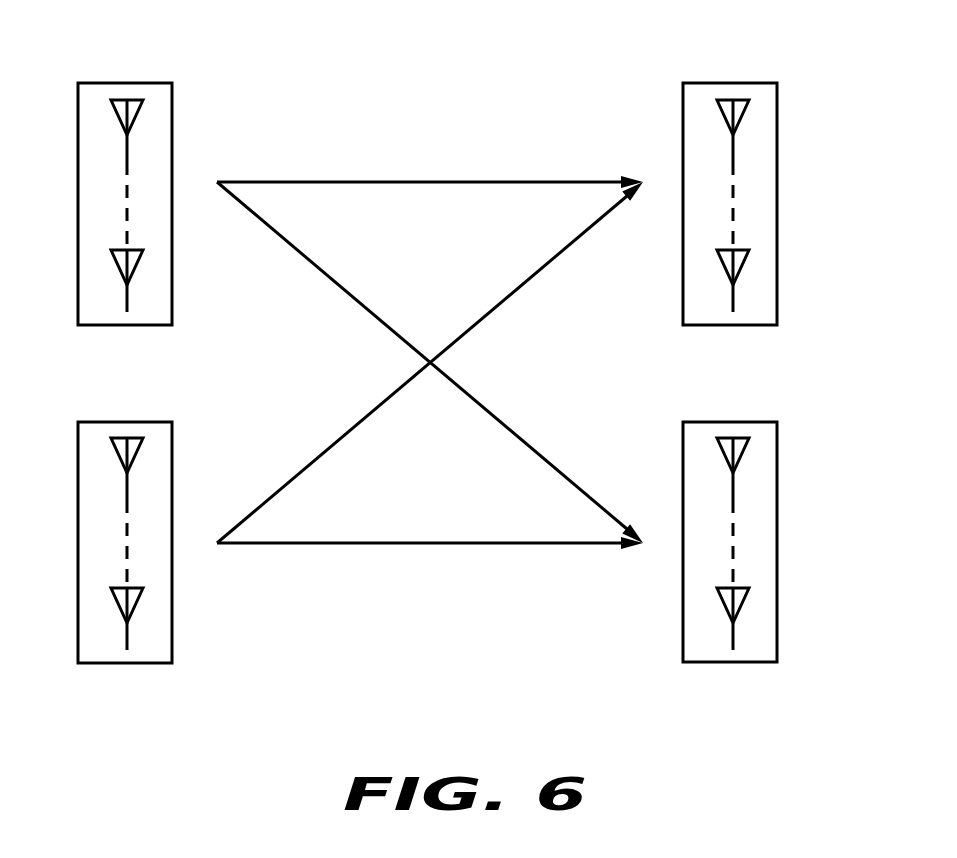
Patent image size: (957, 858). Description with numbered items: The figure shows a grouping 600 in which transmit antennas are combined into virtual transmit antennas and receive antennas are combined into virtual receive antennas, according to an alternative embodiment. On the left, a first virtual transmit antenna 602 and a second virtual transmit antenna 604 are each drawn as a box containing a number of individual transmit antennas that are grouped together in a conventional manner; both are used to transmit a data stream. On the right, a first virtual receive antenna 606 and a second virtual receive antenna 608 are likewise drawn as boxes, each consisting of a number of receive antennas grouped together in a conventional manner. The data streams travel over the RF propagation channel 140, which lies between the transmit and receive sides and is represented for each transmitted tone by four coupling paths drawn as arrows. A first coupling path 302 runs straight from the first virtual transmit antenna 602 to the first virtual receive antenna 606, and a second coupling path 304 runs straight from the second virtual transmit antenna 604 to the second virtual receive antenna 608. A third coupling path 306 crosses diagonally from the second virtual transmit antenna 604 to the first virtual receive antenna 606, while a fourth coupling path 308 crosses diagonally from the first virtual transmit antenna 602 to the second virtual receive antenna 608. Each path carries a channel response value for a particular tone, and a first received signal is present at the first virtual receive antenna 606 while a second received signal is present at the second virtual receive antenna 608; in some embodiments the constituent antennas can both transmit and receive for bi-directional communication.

The RF propagation channel 140 is at (450, 78).
The first coupling path 302 is at (528, 180).
The second coupling path 304 is at (530, 546).
The third coupling path 306 is at (525, 282).
The fourth coupling path 308 is at (525, 440).
The grouping 600 is at (665, 728).
The first virtual transmit antenna 602 is at (77, 110).
The second virtual transmit antenna 604 is at (77, 450).
The first virtual receive antenna 606 is at (778, 106).
The second virtual receive antenna 608 is at (778, 446).